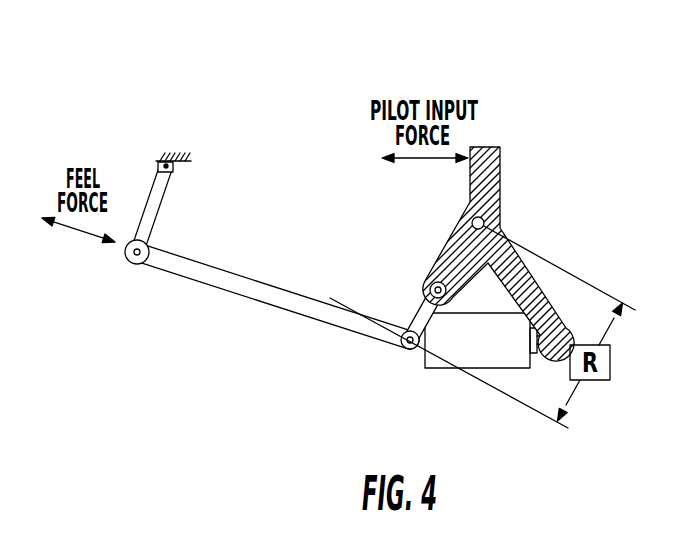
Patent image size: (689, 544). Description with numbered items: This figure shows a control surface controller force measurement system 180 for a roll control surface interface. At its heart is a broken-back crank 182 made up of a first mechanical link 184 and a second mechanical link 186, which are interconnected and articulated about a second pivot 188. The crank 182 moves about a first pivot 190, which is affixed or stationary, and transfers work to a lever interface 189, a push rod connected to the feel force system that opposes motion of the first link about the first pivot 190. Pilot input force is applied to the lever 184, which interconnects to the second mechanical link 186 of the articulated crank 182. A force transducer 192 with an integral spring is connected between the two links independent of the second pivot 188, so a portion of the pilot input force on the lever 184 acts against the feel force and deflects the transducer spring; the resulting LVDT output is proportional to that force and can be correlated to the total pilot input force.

The control surface controller force measurement system 180 is at (493, 105).
The broken-back crank 182 is at (449, 250).
The first mechanical link 184 is at (493, 173).
The second mechanical link 186 is at (420, 316).
The second pivot 188 is at (441, 300).
The lever interface 189 is at (233, 280).
The first pivot 190 is at (485, 220).
The force transducer 192 is at (492, 357).